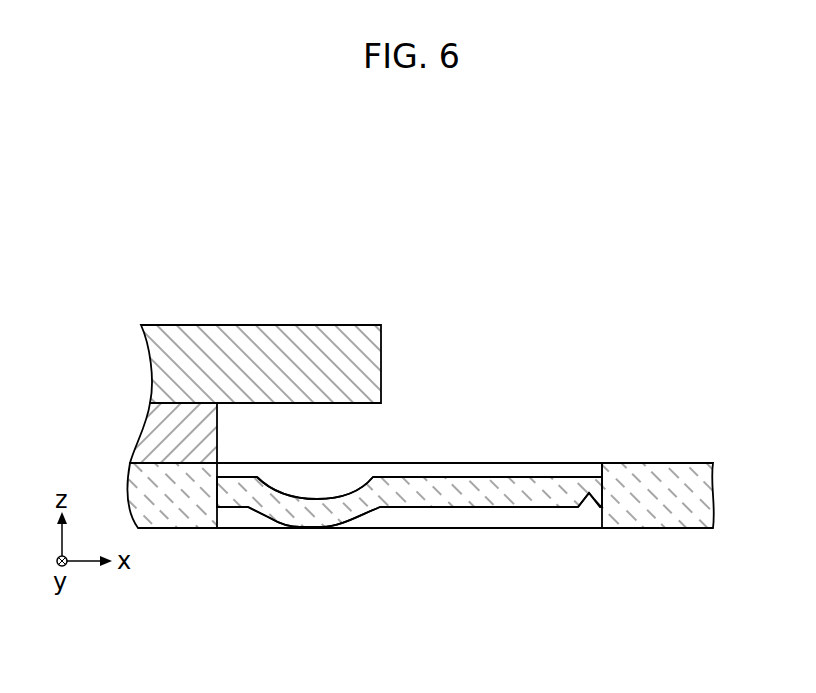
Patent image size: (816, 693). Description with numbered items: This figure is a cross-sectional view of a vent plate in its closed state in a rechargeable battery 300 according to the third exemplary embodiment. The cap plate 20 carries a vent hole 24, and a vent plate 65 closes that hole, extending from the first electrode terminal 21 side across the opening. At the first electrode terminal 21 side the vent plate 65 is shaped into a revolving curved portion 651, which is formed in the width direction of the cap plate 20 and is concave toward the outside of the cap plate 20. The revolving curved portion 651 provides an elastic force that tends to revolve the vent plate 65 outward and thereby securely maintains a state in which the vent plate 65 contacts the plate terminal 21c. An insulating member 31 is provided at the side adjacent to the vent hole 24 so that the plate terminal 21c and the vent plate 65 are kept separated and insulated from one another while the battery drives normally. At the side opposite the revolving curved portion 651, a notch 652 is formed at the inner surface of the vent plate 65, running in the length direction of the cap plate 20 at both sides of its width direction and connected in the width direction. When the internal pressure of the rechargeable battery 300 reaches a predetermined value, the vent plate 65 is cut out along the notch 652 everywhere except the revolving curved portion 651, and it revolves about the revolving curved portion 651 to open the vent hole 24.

The rechargeable battery 300 is at (450, 145).
The cap plate 20 is at (678, 510).
The first electrode terminal 21 is at (258, 312).
The plate terminal 21c is at (316, 348).
The vent hole 24 is at (601, 470).
The insulating member 31 is at (177, 448).
The vent plate 65 is at (409, 510).
The revolving curved portion 651 is at (317, 513).
The notch 652 is at (590, 498).